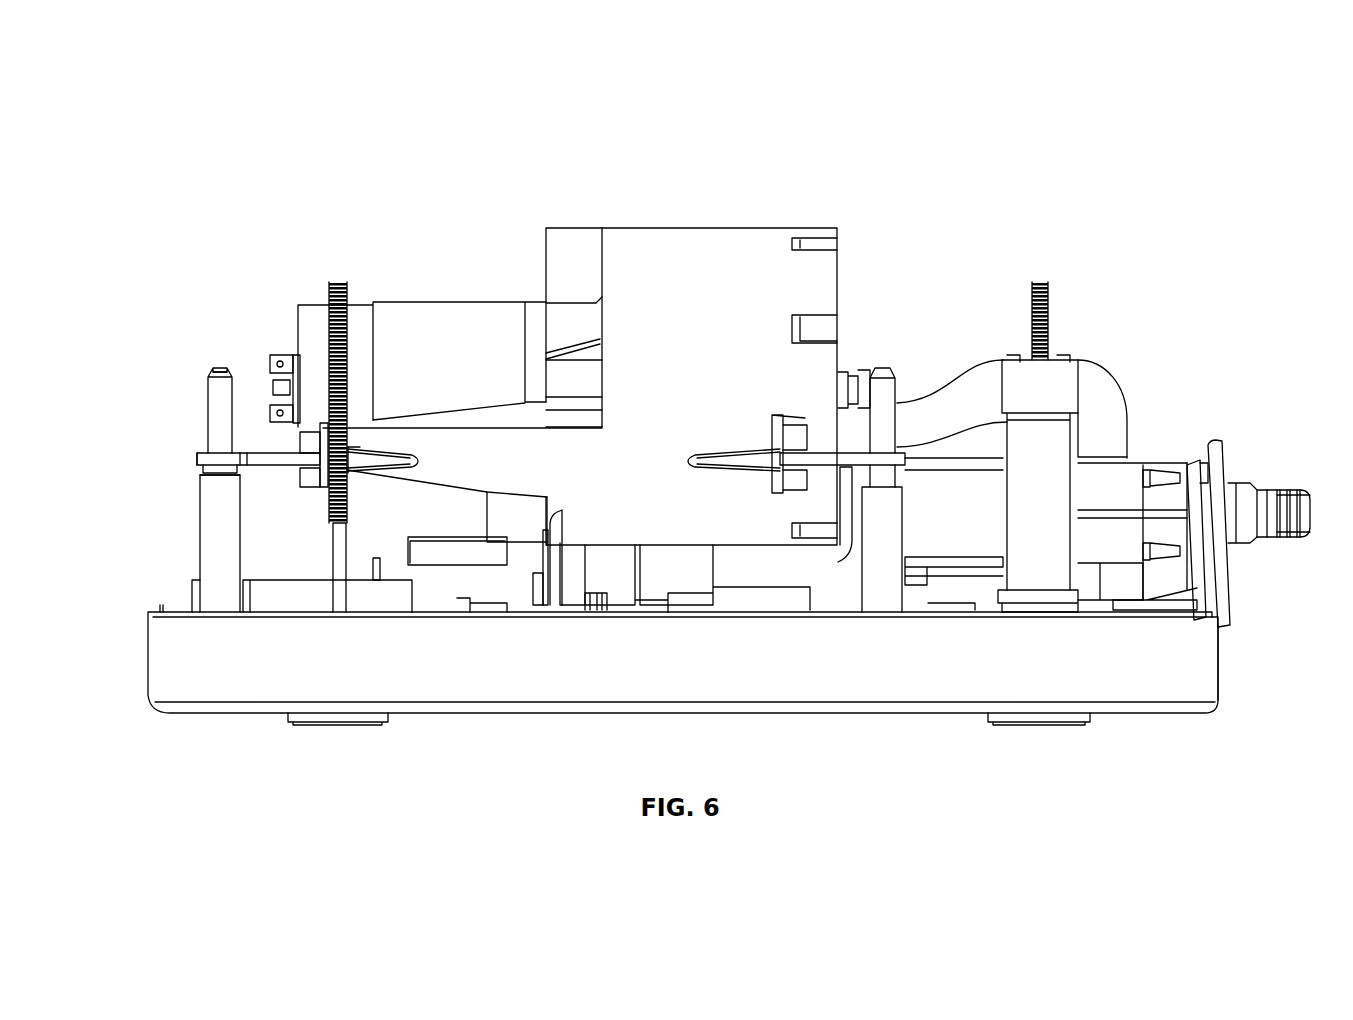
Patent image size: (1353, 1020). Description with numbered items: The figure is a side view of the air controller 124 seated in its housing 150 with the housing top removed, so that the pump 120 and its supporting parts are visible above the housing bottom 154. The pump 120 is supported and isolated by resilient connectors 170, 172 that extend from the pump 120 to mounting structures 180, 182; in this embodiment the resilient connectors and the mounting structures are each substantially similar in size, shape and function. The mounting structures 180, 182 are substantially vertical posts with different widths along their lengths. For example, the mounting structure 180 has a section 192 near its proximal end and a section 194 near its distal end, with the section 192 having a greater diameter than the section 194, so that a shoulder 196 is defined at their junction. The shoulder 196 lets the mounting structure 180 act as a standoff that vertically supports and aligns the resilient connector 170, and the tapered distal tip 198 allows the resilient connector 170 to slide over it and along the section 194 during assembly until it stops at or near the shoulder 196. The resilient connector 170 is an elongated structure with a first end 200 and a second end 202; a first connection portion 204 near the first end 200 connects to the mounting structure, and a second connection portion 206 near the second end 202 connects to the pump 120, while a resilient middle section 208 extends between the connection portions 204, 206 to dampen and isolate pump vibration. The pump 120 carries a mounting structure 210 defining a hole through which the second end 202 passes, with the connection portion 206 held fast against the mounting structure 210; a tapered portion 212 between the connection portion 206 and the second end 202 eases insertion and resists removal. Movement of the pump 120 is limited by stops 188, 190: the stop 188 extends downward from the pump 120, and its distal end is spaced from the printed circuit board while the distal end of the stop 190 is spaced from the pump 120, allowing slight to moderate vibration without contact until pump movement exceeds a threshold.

The air controller 124 is at (314, 120).
The pump 120 is at (765, 222).
The mounting structure 210 is at (328, 432).
The tapered portion 212 is at (356, 455).
The second end 202 is at (412, 459).
The second connection portion 206 is at (352, 468).
The mounting structure 182 is at (915, 378).
The tapered distal tip 198 is at (231, 366).
The resilient middle section 208 is at (257, 447).
The mounting structure 180 is at (197, 382).
The section 194 is at (215, 422).
The first connection portion 204 is at (197, 453).
The first end 200 is at (195, 461).
The shoulder 196 is at (200, 476).
The section 192 is at (215, 545).
The resilient connector 170 is at (279, 478).
The resilient connector 172 is at (850, 523).
The stop 188 is at (550, 582).
The stop 190 is at (607, 603).
The housing bottom 154 is at (1197, 683).
The housing 150 is at (1208, 722).